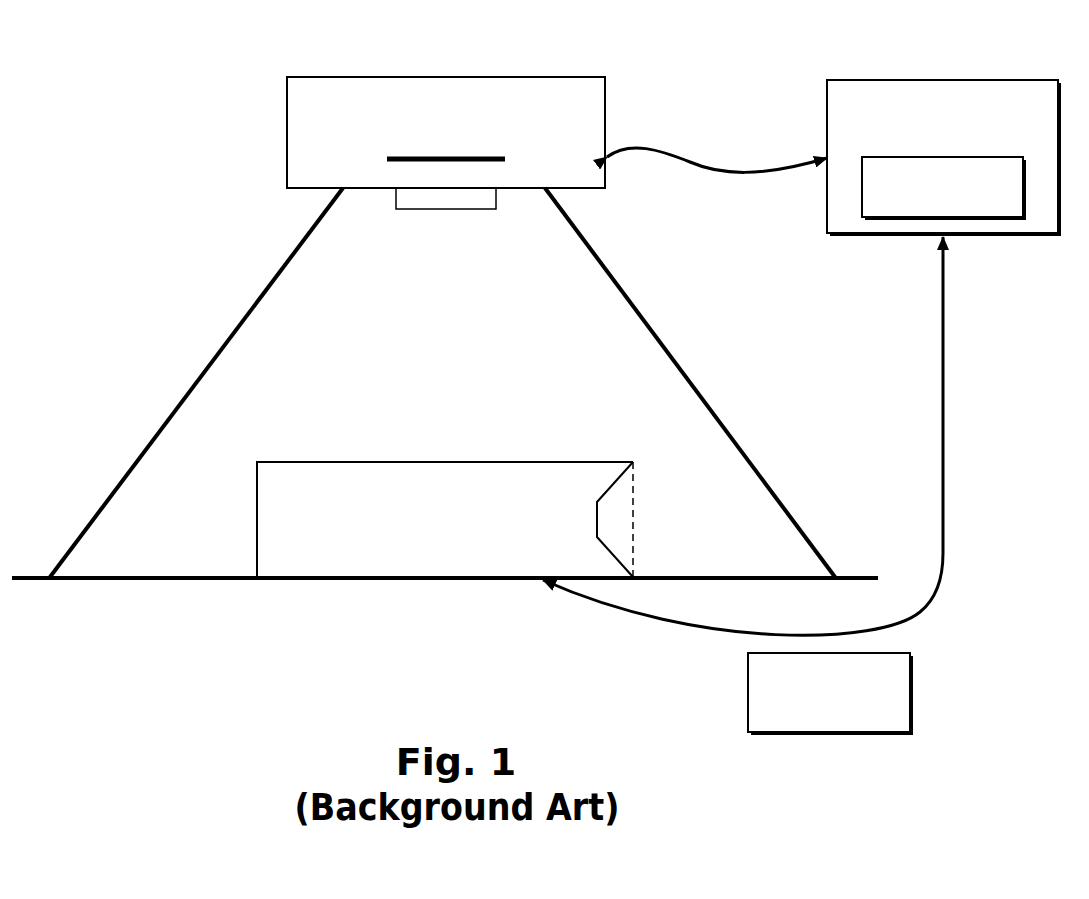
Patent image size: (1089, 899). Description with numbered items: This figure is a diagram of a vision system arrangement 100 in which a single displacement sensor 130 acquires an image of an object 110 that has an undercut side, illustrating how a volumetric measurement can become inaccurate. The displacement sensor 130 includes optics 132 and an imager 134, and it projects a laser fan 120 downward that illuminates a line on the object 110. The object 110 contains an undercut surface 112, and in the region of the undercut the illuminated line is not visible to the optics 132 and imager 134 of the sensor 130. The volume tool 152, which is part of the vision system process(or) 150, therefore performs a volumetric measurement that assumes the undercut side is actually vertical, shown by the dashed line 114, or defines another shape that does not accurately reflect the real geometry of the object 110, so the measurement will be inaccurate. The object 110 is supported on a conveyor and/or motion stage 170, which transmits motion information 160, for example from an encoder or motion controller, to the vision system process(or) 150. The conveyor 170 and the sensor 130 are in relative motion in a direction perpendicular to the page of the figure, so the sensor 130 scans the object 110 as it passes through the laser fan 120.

The vision system arrangement 100 is at (732, 90).
The object 110 is at (445, 519).
The undercut surface 112 is at (610, 495).
The dashed line 114 is at (633, 490).
The laser fan 120 is at (631, 300).
The displacement sensor 130 is at (446, 132).
The optics 132 is at (447, 210).
The imager 134 is at (492, 158).
The vision system process(or) 150 is at (834, 158).
The volume tool 152 is at (944, 188).
The motion information 160 is at (743, 486).
The conveyor and/or motion stage 170 is at (188, 582).